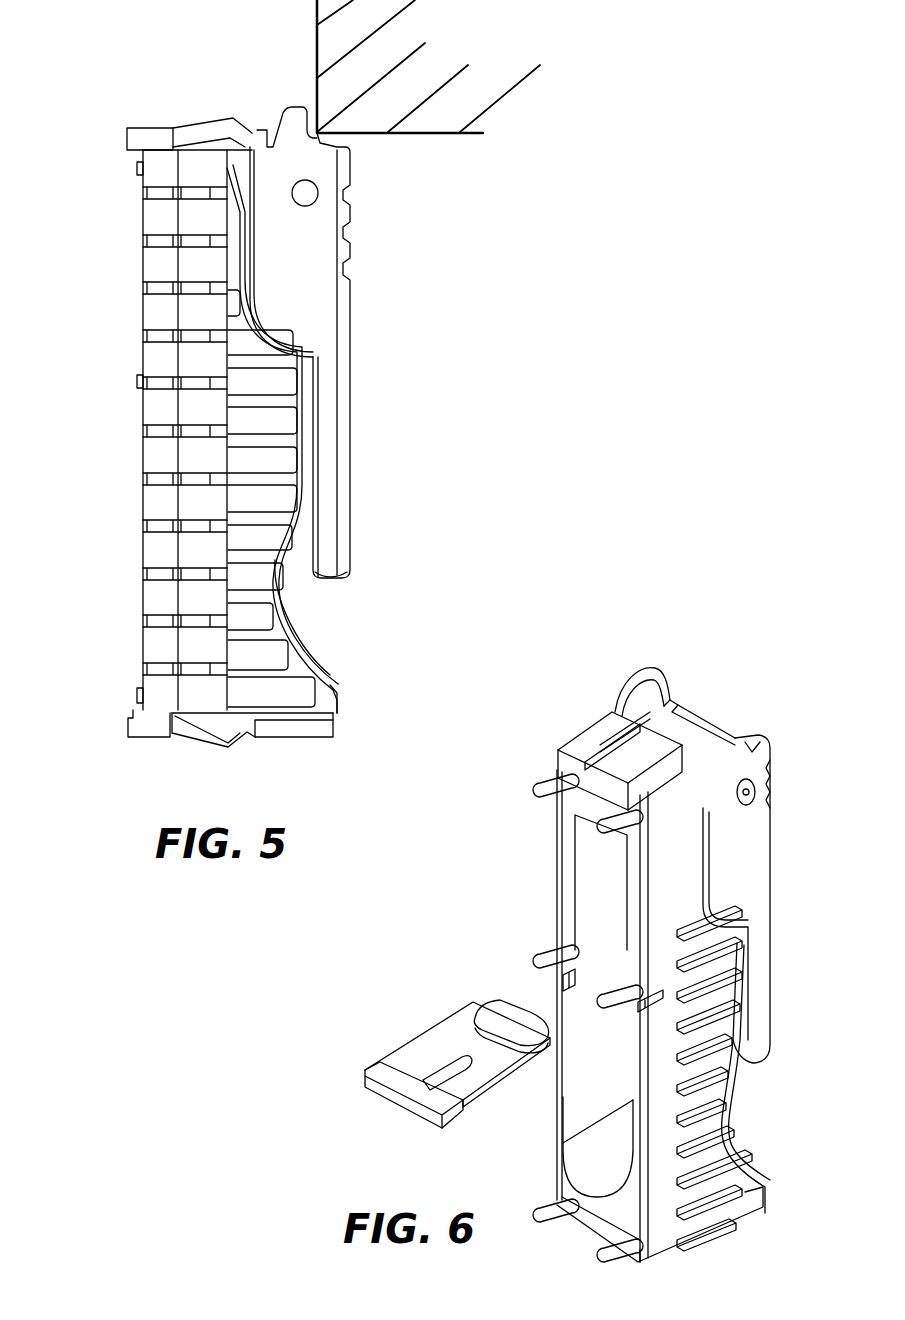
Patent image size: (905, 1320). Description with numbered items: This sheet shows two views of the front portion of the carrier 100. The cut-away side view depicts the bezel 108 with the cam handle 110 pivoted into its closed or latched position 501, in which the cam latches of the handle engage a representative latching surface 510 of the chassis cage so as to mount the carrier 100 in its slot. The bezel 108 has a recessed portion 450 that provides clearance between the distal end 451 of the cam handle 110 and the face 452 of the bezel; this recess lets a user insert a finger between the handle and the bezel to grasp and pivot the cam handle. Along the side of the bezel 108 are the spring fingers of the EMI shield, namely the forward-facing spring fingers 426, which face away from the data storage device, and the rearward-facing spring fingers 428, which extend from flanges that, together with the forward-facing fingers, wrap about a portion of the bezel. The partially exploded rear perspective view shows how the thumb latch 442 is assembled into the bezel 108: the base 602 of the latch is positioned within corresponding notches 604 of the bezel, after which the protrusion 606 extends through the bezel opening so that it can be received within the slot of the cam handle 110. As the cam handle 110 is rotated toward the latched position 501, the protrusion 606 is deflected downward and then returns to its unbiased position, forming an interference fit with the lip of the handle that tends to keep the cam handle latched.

In FIG. 5, the carrier 100 is at (103, 70).
In FIG. 5, the latching surface 510 is at (317, 45).
In FIG. 5, the latched position 501 is at (415, 243).
In FIG. 5, the cam handle 110 is at (340, 370).
In FIG. 6, the cam handle 110 is at (745, 887).
In FIG. 5, the distal end 451 is at (332, 584).
In FIG. 5, the recessed portion 450 is at (326, 644).
In FIG. 5, the face 452 is at (335, 690).
In FIG. 5, the rearward-facing spring fingers 428 is at (155, 698).
In FIG. 5, the forward-facing spring fingers 426 is at (203, 745).
In FIG. 5, the bezel 108 is at (290, 733).
In FIG. 6, the bezel 108 is at (612, 738).
In FIG. 6, the notches 604 is at (648, 1010).
In FIG. 6, the thumb latch 442 is at (503, 1062).
In FIG. 6, the base 602 is at (383, 1068).
In FIG. 6, the protrusion 606 is at (500, 1015).